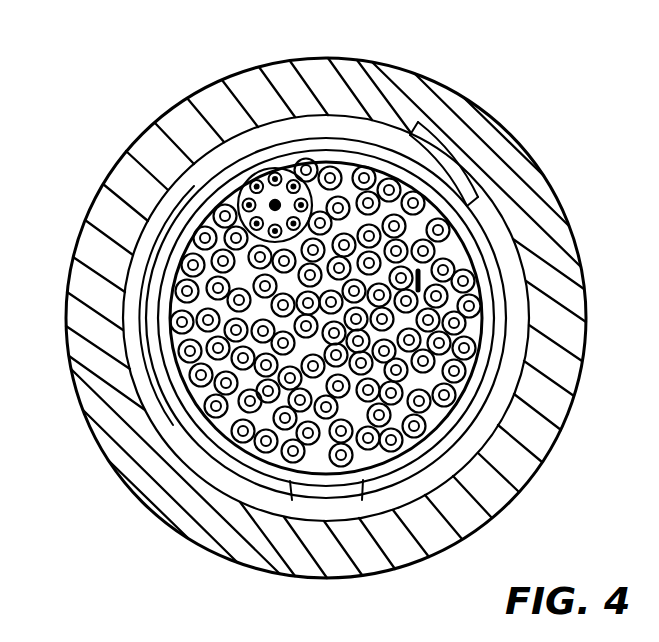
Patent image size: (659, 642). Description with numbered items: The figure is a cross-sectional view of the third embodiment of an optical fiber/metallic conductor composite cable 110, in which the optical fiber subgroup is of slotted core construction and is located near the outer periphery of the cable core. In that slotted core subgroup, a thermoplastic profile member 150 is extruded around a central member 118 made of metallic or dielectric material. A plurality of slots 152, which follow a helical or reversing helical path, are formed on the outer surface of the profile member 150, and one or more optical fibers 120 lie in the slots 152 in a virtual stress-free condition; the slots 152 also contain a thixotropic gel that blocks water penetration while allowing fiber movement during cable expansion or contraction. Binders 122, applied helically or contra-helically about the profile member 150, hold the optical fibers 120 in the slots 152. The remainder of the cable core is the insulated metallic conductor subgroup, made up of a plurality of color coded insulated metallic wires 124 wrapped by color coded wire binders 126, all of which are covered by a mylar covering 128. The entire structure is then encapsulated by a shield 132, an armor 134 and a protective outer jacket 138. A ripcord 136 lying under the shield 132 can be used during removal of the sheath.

The composite cable 110 is at (128, 124).
The central member 118 is at (256, 176).
The optical fibers 120 is at (276, 201).
The binders 122 is at (258, 246).
The insulated metallic wires 124 is at (426, 437).
The wire binders 126 is at (220, 303).
The mylar covering 128 is at (410, 454).
The shield 132 is at (246, 466).
The armor 134 is at (503, 216).
The ripcord 136 is at (160, 342).
The protective outer jacket 138 is at (493, 128).
The thermoplastic profile member 150 is at (253, 203).
The slots 152 is at (322, 162).